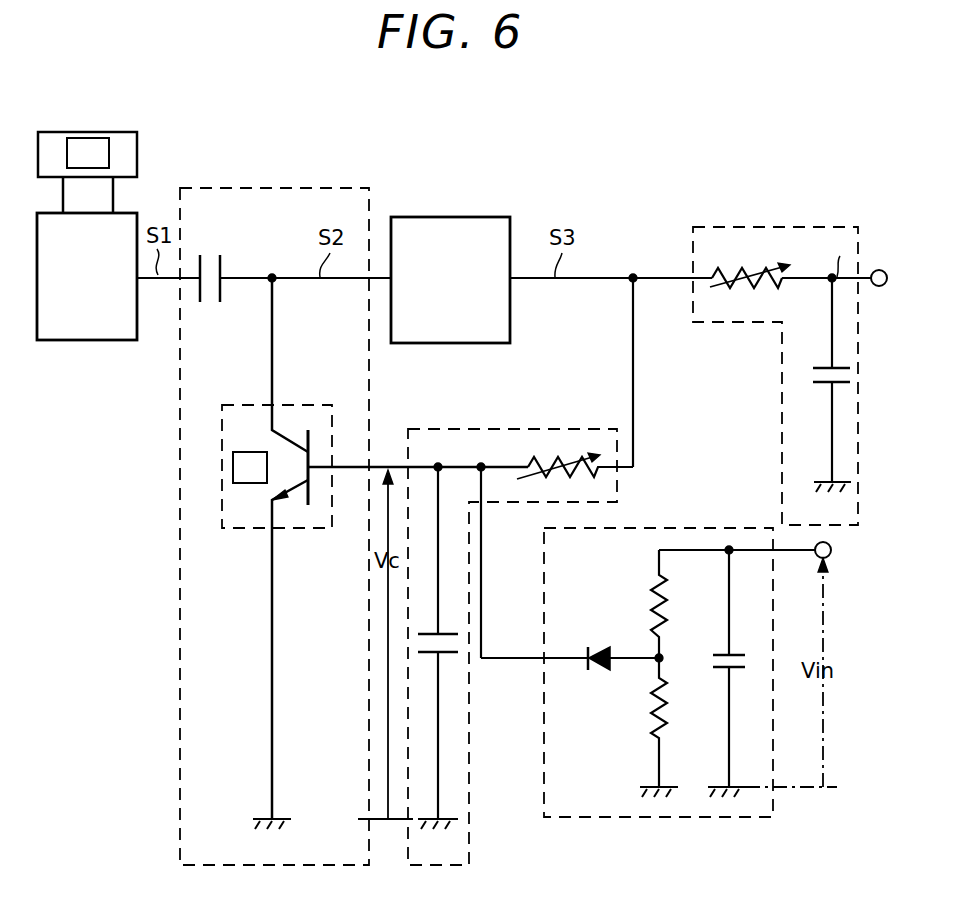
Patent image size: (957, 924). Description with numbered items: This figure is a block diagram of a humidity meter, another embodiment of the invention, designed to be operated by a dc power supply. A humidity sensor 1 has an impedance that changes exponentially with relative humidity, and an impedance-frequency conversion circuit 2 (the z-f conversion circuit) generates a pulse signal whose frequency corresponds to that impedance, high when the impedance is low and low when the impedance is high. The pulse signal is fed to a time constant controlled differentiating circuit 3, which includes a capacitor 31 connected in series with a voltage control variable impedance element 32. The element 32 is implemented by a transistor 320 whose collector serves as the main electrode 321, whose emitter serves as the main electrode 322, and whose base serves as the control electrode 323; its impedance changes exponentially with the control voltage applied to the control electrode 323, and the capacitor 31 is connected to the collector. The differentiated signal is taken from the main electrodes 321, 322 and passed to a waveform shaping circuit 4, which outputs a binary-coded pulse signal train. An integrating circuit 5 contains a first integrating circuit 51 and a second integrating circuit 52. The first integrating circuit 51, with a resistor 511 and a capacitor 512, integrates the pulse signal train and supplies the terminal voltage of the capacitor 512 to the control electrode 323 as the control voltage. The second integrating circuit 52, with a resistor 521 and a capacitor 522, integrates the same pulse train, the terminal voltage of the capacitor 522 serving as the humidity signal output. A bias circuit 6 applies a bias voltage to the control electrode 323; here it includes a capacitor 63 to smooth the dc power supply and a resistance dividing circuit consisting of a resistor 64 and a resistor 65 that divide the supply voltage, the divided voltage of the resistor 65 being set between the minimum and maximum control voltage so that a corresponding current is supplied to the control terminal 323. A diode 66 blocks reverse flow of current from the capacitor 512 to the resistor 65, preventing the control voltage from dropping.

The humidity sensor 1 is at (117, 132).
The impedance-frequency conversion circuit 2 is at (100, 343).
The time constant controlled differentiating circuit 3 is at (272, 187).
The waveform shaping circuit 4 is at (467, 216).
The integrating circuit 5 is at (709, 164).
The bias circuit 6 is at (633, 819).
The capacitor 31 is at (223, 263).
The voltage control variable impedance element 32 is at (356, 548).
The first integrating circuit 51 is at (515, 416).
The second integrating circuit 52 is at (724, 241).
The capacitor 63 is at (712, 655).
The resistor 64 is at (653, 608).
The resistor 65 is at (652, 705).
The diode 66 is at (600, 648).
The transistor 320 is at (297, 416).
The main electrode 321 is at (273, 405).
The main electrode 322 is at (272, 530).
The control electrode 323 is at (332, 466).
The resistor 511 is at (563, 455).
The capacitor 512 is at (458, 645).
The resistor 521 is at (728, 270).
The capacitor 522 is at (807, 382).